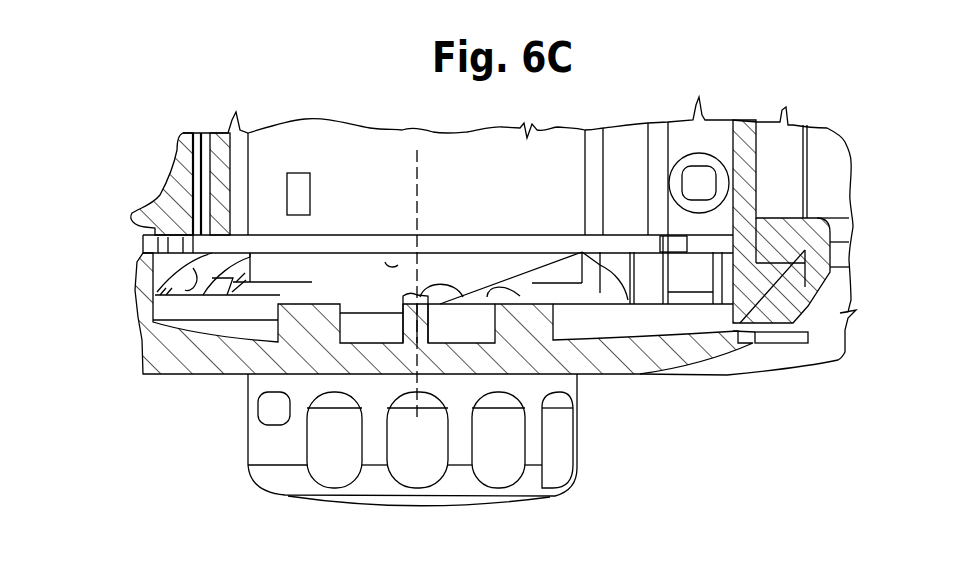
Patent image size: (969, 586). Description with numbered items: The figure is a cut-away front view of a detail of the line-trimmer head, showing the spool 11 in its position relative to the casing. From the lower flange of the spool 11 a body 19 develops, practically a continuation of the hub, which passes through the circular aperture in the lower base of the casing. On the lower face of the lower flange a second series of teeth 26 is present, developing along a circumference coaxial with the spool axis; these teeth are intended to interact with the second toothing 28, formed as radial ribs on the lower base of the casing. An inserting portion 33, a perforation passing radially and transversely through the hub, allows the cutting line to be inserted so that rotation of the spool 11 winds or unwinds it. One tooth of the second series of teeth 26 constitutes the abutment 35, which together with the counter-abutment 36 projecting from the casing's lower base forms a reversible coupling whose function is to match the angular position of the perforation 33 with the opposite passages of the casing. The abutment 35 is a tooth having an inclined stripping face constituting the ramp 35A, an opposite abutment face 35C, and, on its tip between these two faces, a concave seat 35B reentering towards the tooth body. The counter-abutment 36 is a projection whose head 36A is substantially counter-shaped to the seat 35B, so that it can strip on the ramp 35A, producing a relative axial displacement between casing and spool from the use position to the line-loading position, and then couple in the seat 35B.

The spool 11 is at (610, 176).
The body 19 is at (458, 482).
The second series of teeth 26 is at (186, 248).
The second toothing 28 is at (397, 330).
The inserting portion 33 is at (300, 190).
The abutment 35 is at (434, 272).
The ramp 35A is at (160, 292).
The seat 35B is at (398, 300).
The abutment face 35C is at (385, 262).
The counter-abutment 36 is at (443, 333).
The head 36A is at (436, 327).